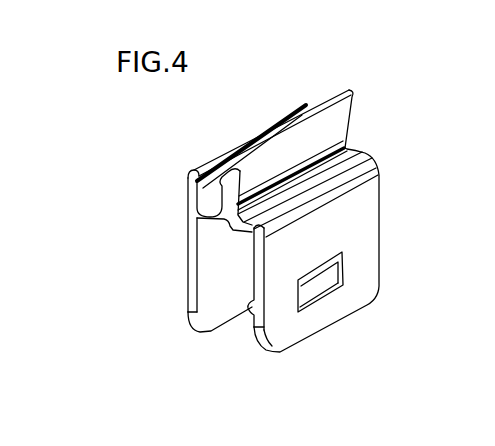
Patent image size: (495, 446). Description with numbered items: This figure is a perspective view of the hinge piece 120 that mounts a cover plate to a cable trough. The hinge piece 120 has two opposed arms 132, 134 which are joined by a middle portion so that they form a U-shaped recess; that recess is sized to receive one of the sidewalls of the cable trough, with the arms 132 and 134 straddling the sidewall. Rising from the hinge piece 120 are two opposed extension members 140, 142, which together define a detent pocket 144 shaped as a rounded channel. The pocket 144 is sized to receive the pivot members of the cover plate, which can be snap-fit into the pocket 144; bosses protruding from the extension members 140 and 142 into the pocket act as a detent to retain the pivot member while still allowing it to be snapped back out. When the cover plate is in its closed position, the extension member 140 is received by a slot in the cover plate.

The hinge piece 120 is at (407, 148).
The arm 132 is at (187, 255).
The arm 134 is at (266, 266).
The extension member 140 is at (193, 188).
The extension member 142 is at (337, 128).
The detent pocket 144 is at (206, 199).